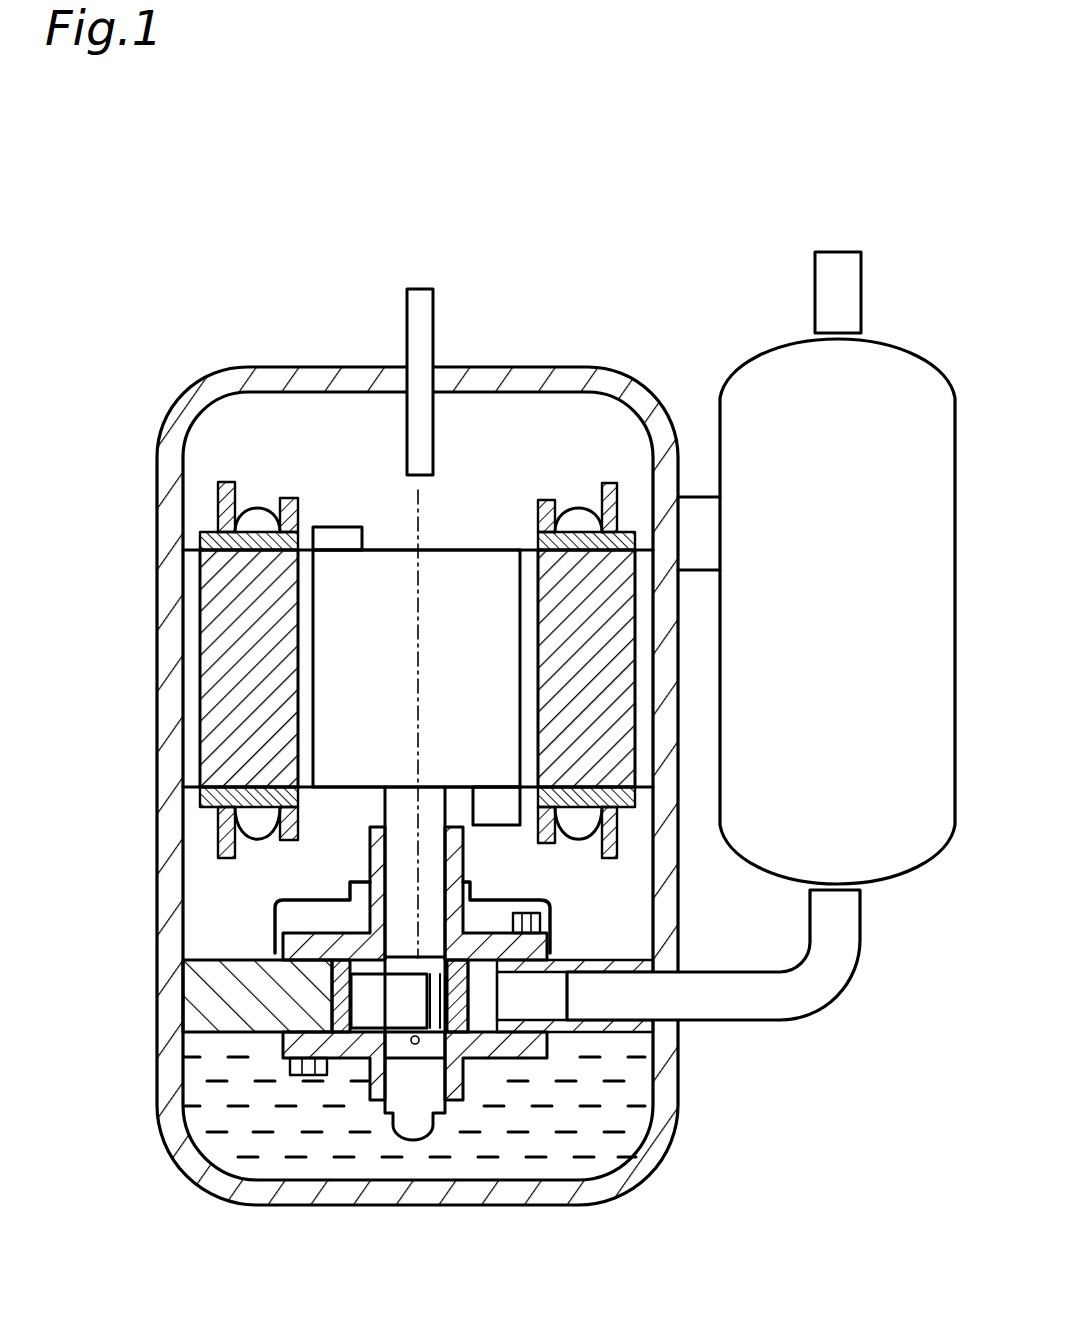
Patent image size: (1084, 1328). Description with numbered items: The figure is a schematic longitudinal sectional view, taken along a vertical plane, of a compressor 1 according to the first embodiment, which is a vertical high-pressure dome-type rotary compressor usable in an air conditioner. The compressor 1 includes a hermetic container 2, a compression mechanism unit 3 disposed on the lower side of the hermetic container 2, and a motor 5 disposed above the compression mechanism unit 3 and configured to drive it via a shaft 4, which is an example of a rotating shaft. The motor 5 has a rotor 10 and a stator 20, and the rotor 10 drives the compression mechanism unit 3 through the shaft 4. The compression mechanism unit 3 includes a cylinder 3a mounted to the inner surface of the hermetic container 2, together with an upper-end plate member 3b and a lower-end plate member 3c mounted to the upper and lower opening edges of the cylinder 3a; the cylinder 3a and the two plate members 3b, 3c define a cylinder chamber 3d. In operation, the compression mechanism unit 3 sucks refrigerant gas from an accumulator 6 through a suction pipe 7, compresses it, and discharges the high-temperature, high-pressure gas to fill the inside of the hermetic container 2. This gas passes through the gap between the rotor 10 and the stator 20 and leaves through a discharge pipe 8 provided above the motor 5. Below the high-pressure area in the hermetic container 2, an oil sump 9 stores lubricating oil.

The compressor 1 is at (681, 357).
The hermetic container 2 is at (198, 407).
The compression mechanism unit 3 is at (390, 1040).
The cylinder 3a is at (243, 1020).
The upper-end plate member 3b is at (290, 946).
The lower-end plate member 3c is at (340, 1055).
The cylinder chamber 3d is at (487, 1027).
The shaft 4 is at (433, 860).
The motor 5 is at (418, 610).
The accumulator 6 is at (903, 342).
The suction pipe 7 is at (760, 1005).
The discharge pipe 8 is at (417, 331).
The oil sump 9 is at (613, 1123).
The rotor 10 is at (500, 533).
The stator 20 is at (582, 483).